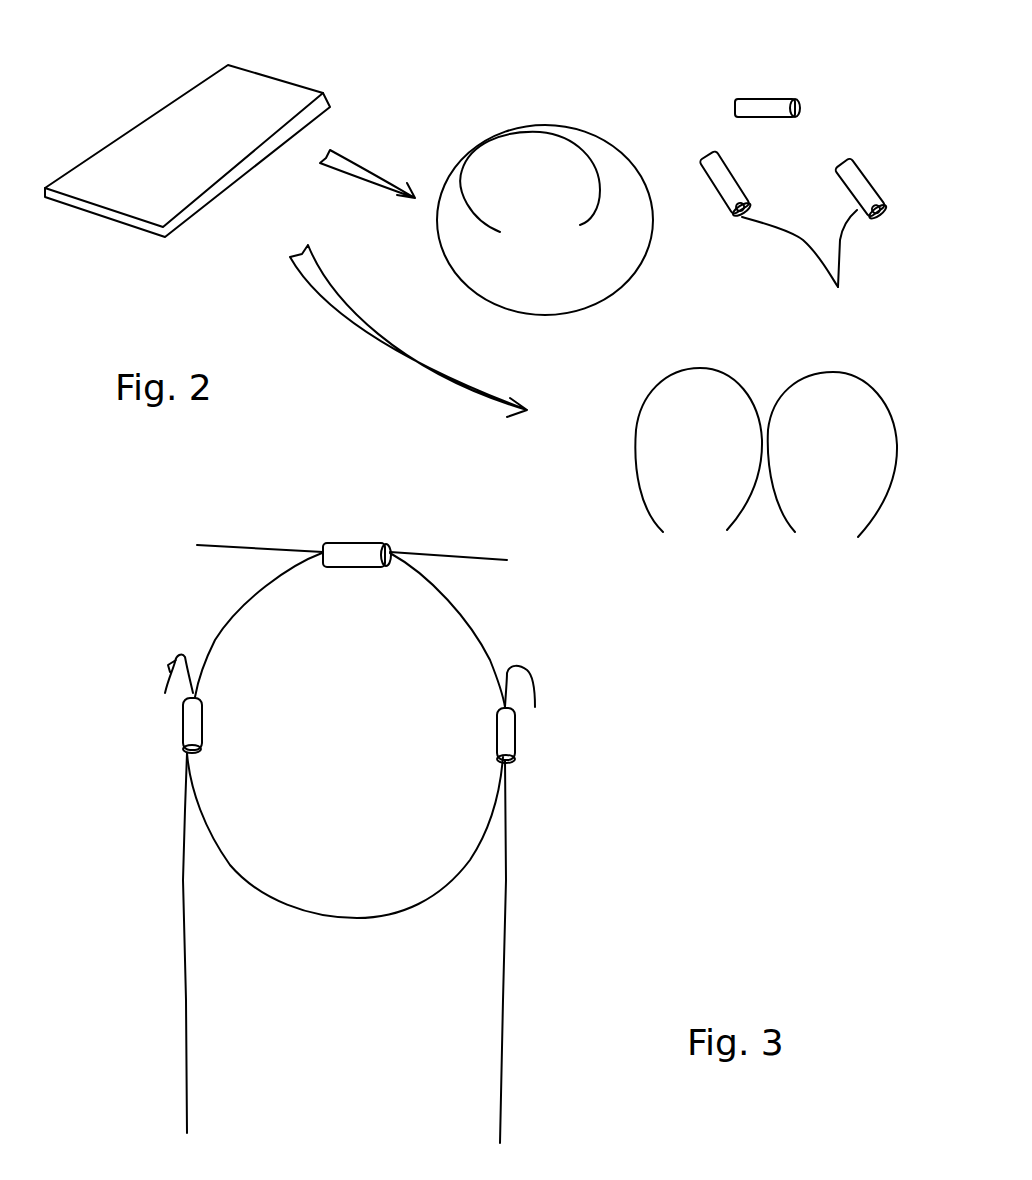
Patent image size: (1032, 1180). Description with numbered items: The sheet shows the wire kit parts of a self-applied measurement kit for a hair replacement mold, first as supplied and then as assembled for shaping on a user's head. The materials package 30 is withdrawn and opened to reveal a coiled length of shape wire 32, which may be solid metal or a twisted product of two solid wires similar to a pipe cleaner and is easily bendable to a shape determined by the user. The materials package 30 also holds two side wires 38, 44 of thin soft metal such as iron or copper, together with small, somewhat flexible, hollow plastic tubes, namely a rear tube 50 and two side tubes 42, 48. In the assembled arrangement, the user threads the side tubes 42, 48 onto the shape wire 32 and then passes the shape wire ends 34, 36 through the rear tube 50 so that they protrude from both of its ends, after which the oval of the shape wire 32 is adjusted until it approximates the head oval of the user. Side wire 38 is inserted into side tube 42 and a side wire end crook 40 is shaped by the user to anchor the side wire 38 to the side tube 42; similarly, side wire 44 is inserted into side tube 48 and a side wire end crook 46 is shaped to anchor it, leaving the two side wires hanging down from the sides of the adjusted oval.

In FIG. 2, the materials package 30 is at (125, 220).
In FIG. 2, the shape wire 32 is at (600, 135).
In FIG. 3, the shape wire 32 is at (365, 920).
In FIG. 3, the shape wire end 34 is at (218, 543).
In FIG. 3, the shape wire end 36 is at (505, 558).
In FIG. 2, the side wire 38 is at (746, 517).
In FIG. 3, the side wire 38 is at (192, 1048).
In FIG. 3, the side wire end crook 40 is at (167, 660).
In FIG. 2, the side tube 42 is at (797, 237).
In FIG. 3, the side tube 42 is at (182, 730).
In FIG. 2, the side wire 44 is at (785, 577).
In FIG. 3, the side wire 44 is at (508, 1063).
In FIG. 3, the side wire end crook 46 is at (535, 682).
In FIG. 2, the side tube 48 is at (861, 222).
In FIG. 3, the side tube 48 is at (513, 738).
In FIG. 2, the rear tube 50 is at (788, 98).
In FIG. 3, the rear tube 50 is at (362, 542).